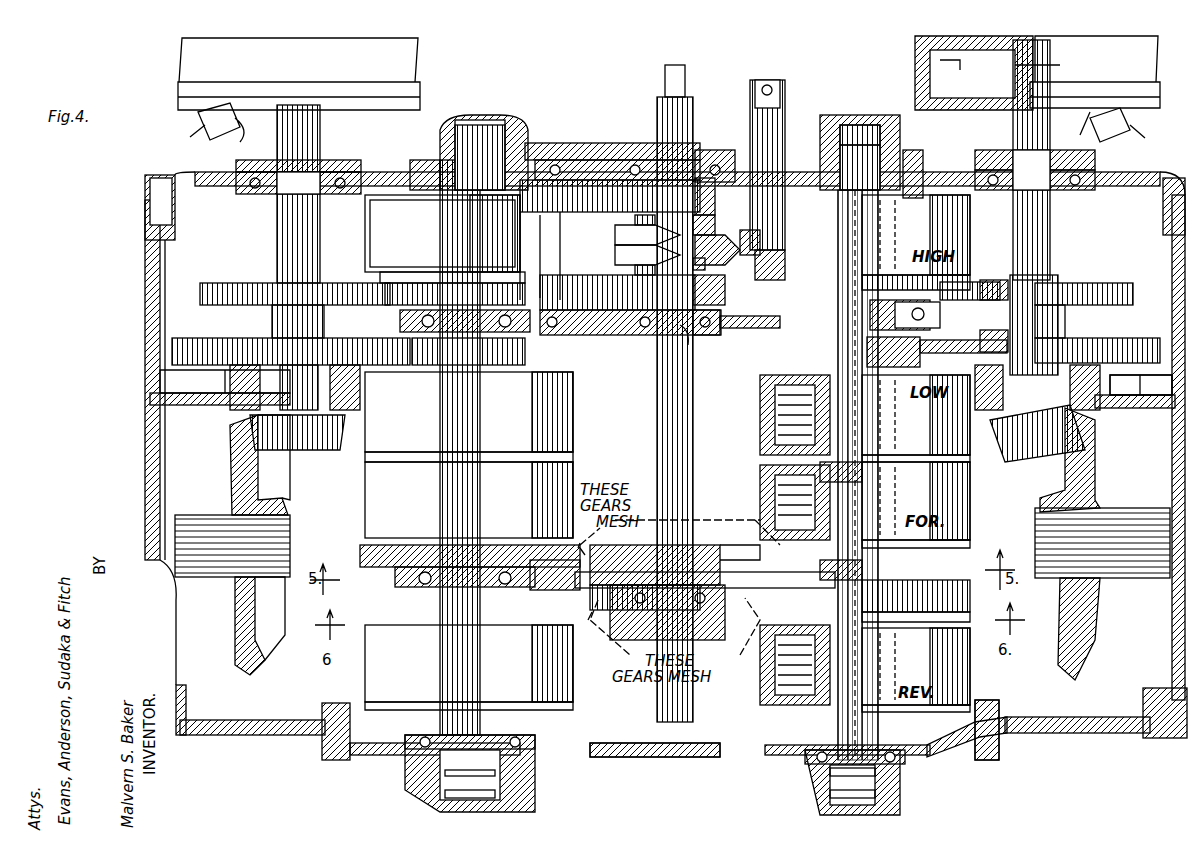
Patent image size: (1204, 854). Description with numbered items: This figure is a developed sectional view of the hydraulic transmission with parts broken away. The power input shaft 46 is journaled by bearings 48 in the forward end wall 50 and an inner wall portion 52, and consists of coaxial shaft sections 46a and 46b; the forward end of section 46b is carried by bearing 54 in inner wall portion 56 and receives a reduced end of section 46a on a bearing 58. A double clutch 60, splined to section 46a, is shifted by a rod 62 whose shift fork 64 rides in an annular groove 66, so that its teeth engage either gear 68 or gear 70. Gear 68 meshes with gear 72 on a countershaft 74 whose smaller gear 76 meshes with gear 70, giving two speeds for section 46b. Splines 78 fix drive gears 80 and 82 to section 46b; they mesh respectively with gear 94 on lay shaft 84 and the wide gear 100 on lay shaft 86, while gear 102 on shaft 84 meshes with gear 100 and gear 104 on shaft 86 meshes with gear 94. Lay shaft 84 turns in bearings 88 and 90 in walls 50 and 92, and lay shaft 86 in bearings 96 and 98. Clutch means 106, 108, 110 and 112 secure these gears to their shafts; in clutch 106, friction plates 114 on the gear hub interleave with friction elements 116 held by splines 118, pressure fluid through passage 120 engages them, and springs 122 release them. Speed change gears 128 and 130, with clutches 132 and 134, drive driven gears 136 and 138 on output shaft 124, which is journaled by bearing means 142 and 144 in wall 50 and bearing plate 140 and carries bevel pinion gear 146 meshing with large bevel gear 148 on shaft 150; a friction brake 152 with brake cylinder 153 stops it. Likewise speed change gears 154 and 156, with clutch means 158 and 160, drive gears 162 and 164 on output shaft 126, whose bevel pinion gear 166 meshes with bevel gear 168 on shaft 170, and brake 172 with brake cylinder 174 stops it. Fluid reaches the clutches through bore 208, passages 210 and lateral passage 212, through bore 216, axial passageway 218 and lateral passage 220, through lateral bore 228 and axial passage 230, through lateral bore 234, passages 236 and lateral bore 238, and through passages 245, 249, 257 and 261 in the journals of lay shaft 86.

The power input shaft 46 is at (692, 100).
The forward input shaft section 46a is at (708, 218).
The rearward input shaft section 46b is at (665, 390).
The bearings 48 is at (705, 150).
The forward end wall 50 is at (582, 145).
The inner wall portion 52 is at (612, 635).
The bearing 54 is at (705, 335).
The inner wall portion 56 is at (758, 330).
The bearing 58 is at (706, 268).
The double clutch 60 is at (615, 255).
The shift rod 62 is at (778, 112).
The shift fork 64 is at (742, 250).
The annular groove 66 is at (615, 240).
The gear 68 is at (710, 205).
The gear 70 is at (727, 293).
The gear 72 is at (545, 212).
The countershaft 74 is at (575, 249).
The smaller gear 76 is at (578, 325).
The splines 78 is at (660, 540).
The drive gear 80 is at (730, 548).
The drive gear 82 is at (770, 581).
The lay shaft 84 is at (880, 490).
The lay shaft 86 is at (553, 575).
The bearing 88 is at (912, 150).
The bearing 90 is at (910, 748).
The end wall 92 is at (770, 755).
The gear 94 is at (955, 572).
The bearing 96 is at (432, 160).
The bearing 98 is at (425, 735).
The wide gear 100 is at (540, 640).
The second gear 102 is at (965, 605).
The gear 104 is at (362, 548).
The clutch means 106 is at (962, 504).
The clutch means 108 is at (962, 659).
The clutch means 110 is at (560, 702).
The clutch means 112 is at (372, 496).
The friction plates 114 is at (653, 447).
The annular friction elements 116 is at (760, 500).
The splines 118 is at (870, 505).
The passage 120 is at (850, 480).
The springs 122 is at (760, 468).
The output shaft 124 is at (1050, 234).
The output shaft 126 is at (280, 238).
The low speed gear 128 is at (930, 340).
The high speed gear 130 is at (950, 290).
The friction clutch 132 is at (960, 445).
The clutch 134 is at (955, 245).
The driven gear 136 is at (1143, 345).
The driven gear 138 is at (1115, 290).
The bearing plate 140 is at (1155, 408).
The bearing means 142 is at (1058, 195).
The bearing means 144 is at (1085, 405).
The bevel pinion gear 146 is at (1022, 455).
The large bevel gear 148 is at (1092, 473).
The shaft 150 is at (1125, 528).
The friction brake 152 is at (1108, 72).
The hydraulic brake cylinder 153 is at (1112, 134).
The speed change gear 154 is at (400, 290).
The speed change gear 156 is at (445, 365).
The clutch means 158 is at (375, 245).
The clutch means 160 is at (560, 411).
The gear 162 is at (225, 300).
The gear 164 is at (202, 345).
The bevel pinion gear 166 is at (312, 445).
The large bevel gear 168 is at (245, 481).
The shaft 170 is at (215, 560).
The brake 172 is at (310, 72).
The brake cylinder 174 is at (213, 135).
The bore 208 is at (840, 145).
The longitudinal passages 210 is at (880, 210).
The lateral passage 212 is at (770, 248).
The bore 216 is at (850, 125).
The axial passageway 218 is at (870, 130).
The lateral passage 220 is at (850, 430).
The lateral bore 228 is at (805, 800).
The axial passage 230 is at (880, 583).
The lateral bore 234 is at (805, 780).
The longitudinal passages 236 is at (830, 720).
The lateral bore 238 is at (860, 683).
The passage 245 is at (500, 800).
The passage 249 is at (500, 776).
The passage 257 is at (505, 150).
The passage 261 is at (505, 125).